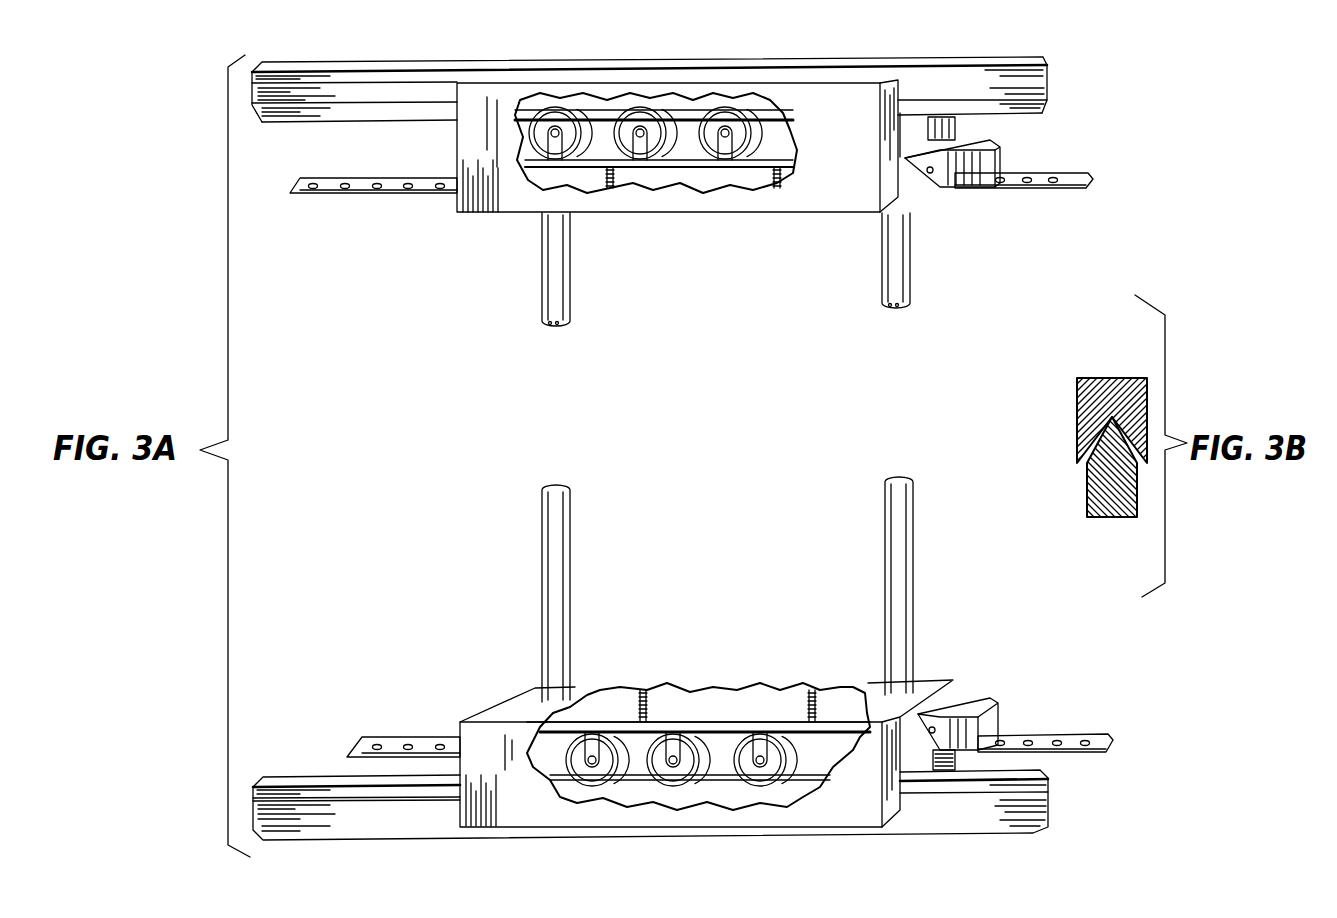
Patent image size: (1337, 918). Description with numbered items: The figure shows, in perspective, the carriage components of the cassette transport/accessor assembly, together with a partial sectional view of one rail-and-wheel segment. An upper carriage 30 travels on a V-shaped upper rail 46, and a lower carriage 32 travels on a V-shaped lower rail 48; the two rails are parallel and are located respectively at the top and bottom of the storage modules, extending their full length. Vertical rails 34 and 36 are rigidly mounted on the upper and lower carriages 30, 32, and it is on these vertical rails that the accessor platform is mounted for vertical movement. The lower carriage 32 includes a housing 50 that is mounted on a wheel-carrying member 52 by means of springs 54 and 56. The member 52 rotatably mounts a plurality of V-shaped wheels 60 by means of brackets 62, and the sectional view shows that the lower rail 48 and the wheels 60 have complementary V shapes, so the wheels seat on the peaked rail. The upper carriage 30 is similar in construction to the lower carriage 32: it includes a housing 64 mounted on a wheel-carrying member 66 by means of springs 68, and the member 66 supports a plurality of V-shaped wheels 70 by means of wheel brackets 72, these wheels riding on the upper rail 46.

In FIG. 3A, the upper carriage 30 is at (765, 204).
In FIG. 3A, the lower carriage 32 is at (781, 652).
In FIG. 3A, the vertical rail 34 is at (868, 281).
In FIG. 3A, the vertical rail 36 is at (530, 306).
In FIG. 3A, the upper rail 46 is at (327, 95).
In FIG. 3A, the lower rail 48 is at (307, 787).
In FIG. 3B, the lower rail 48 is at (1110, 510).
In FIG. 3A, the housing 50 is at (507, 710).
In FIG. 3A, the wheel-carrying member 52 is at (753, 720).
In FIG. 3A, the spring 54 is at (637, 708).
In FIG. 3A, the spring 56 is at (830, 687).
In FIG. 3A, the V-shaped wheel 60 is at (697, 750).
In FIG. 3B, the V-shaped wheel 60 is at (1112, 377).
In FIG. 3A, the bracket 62 is at (672, 737).
In FIG. 3A, the housing 64 is at (497, 197).
In FIG. 3A, the wheel-carrying member 66 is at (560, 190).
In FIG. 3A, the spring 68 is at (640, 190).
In FIG. 3A, the V-shaped wheel 70 is at (712, 142).
In FIG. 3A, the wheel bracket 72 is at (643, 153).